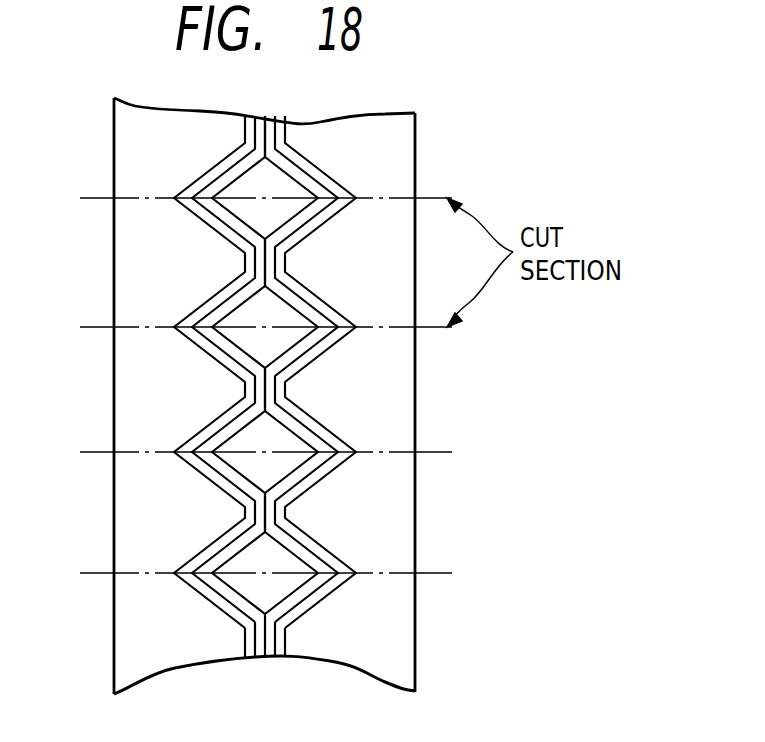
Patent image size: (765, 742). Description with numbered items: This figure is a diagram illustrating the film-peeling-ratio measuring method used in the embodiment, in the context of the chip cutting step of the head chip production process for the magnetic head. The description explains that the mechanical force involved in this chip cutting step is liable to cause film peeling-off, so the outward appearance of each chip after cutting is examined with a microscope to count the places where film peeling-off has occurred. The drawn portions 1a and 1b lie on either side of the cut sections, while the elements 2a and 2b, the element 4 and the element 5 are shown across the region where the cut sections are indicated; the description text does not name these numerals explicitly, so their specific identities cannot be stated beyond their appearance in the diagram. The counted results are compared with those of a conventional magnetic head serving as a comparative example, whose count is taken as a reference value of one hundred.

The first substrate portion 1a is at (405, 170).
The second substrate portion 1b is at (134, 165).
The first conductor end 2a is at (285, 637).
The second conductor end 2b is at (245, 635).
The center conductor 4 is at (271, 660).
The zigzag conductor pattern 5 is at (285, 186).